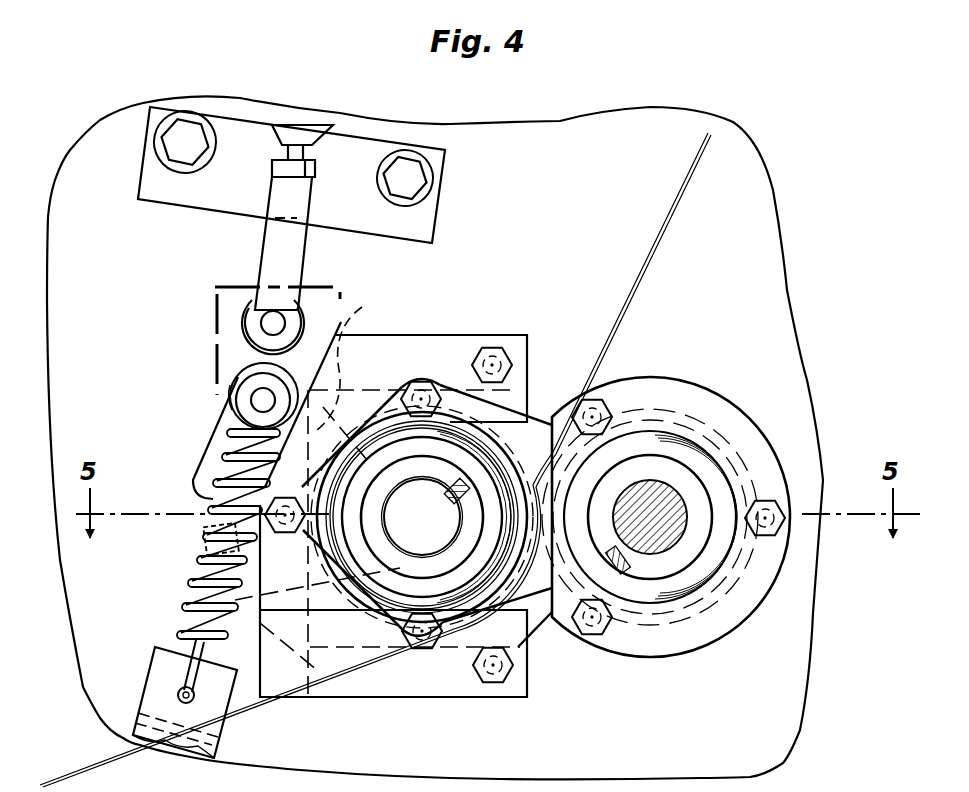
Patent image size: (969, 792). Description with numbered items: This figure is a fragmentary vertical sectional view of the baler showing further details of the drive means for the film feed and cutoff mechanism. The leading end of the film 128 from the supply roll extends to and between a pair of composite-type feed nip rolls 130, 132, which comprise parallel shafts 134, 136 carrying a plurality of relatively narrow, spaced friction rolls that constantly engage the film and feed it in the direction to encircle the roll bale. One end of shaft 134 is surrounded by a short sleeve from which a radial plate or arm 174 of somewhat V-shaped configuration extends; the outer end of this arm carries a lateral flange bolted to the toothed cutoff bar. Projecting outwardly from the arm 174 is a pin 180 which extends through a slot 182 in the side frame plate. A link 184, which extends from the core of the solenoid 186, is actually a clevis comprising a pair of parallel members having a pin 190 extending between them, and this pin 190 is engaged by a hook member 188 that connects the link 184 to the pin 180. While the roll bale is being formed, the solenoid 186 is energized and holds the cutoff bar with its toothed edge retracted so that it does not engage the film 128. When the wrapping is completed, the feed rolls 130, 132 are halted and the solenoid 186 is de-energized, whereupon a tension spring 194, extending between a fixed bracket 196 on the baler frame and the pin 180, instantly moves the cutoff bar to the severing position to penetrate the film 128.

The leading end of the film 128 is at (668, 216).
The feed nip roll 130 is at (521, 448).
The feed nip roll 132 is at (544, 566).
The shaft 134 is at (455, 484).
The shaft 136 is at (652, 488).
The radial plate or arm 174 is at (358, 308).
The pin 180 is at (214, 440).
The slot 182 is at (218, 430).
The link 184 is at (262, 262).
The solenoid 186 is at (277, 138).
The hook member 188 is at (250, 347).
The pin 190 is at (262, 322).
The tension spring 194 is at (215, 554).
The fixed bracket 196 is at (157, 674).